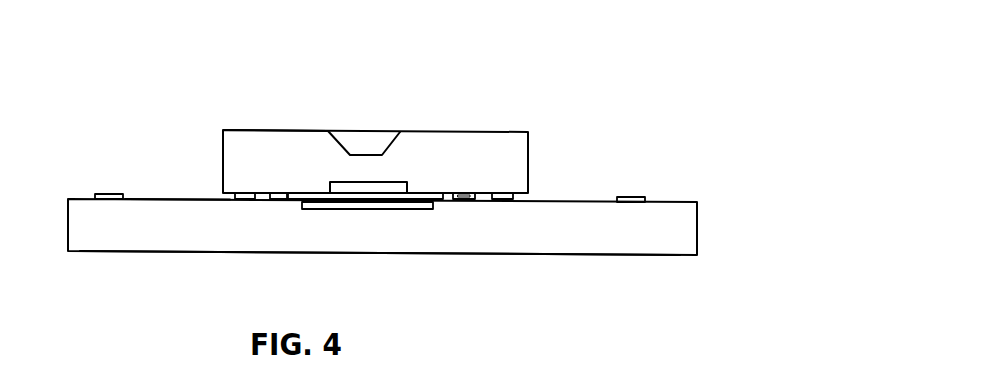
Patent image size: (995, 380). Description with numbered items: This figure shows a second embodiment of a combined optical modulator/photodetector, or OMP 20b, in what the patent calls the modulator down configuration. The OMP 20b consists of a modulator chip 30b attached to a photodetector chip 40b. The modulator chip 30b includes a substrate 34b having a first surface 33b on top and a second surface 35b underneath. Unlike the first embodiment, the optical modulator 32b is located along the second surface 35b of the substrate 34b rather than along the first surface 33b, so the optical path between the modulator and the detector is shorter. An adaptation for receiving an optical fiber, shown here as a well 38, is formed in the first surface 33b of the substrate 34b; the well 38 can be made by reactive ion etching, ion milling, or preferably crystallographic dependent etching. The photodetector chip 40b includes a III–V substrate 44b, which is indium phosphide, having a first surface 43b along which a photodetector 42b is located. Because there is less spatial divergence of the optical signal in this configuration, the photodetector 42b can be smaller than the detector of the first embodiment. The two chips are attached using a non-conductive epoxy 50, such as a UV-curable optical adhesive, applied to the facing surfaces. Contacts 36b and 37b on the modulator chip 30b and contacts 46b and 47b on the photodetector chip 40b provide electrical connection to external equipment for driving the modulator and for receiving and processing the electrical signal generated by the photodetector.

The OMP 20b is at (655, 64).
The modulator chip 30b is at (185, 138).
The optical modulator 32b is at (363, 180).
The first surface 33b is at (290, 130).
The substrate 34b is at (503, 168).
The second surface 35b is at (442, 205).
The contact 36b is at (463, 192).
The contact 37b is at (272, 201).
The well 38 is at (368, 146).
The photodetector chip 40b is at (767, 212).
The photodetector 42b is at (328, 210).
The first surface 43b is at (163, 198).
The III–V substrate 44b is at (618, 237).
The contact 46b is at (628, 194).
The contact 47b is at (110, 187).
The non-conductive epoxy 50 is at (242, 201).